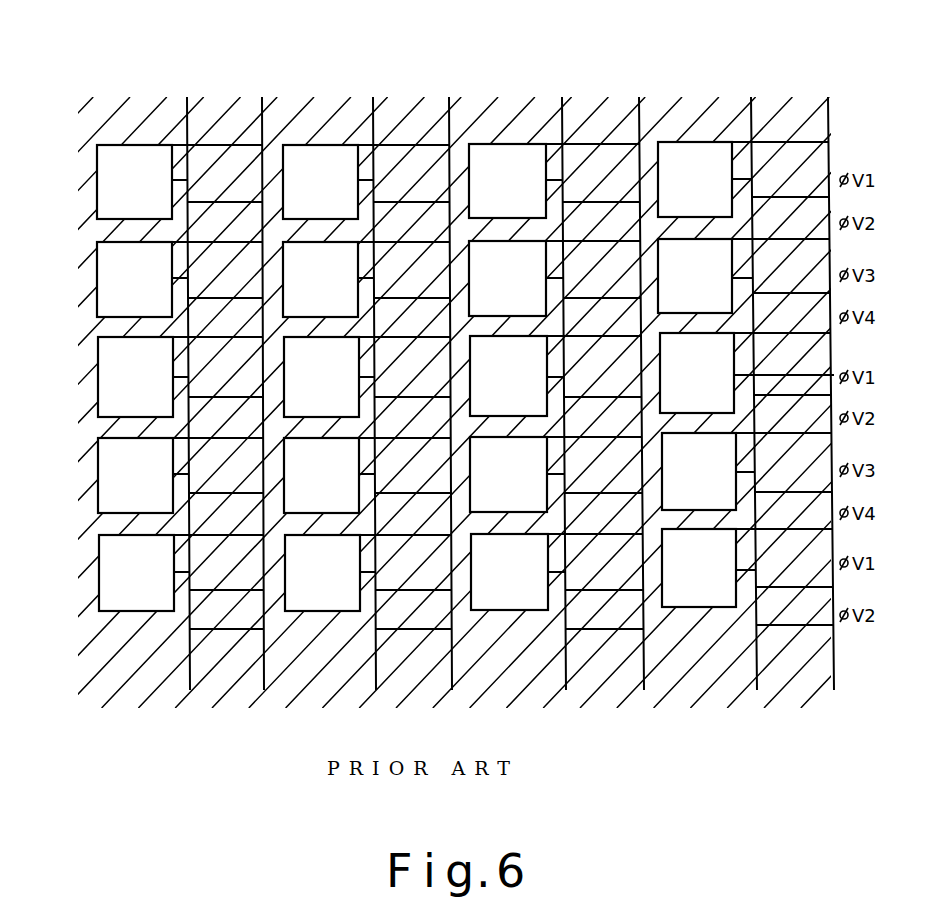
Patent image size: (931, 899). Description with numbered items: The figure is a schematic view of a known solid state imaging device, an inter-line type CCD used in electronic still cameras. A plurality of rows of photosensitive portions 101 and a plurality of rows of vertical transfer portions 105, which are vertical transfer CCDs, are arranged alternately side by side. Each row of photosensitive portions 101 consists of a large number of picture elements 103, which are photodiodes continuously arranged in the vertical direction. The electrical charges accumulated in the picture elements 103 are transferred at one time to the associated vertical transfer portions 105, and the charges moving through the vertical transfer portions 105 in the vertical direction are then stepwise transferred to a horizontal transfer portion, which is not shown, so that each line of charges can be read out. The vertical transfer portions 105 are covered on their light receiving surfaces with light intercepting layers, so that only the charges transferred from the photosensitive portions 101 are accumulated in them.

The photosensitive portion 101 is at (133, 48).
The picture element 103 is at (97, 224).
The vertical transfer portion 105 is at (243, 48).